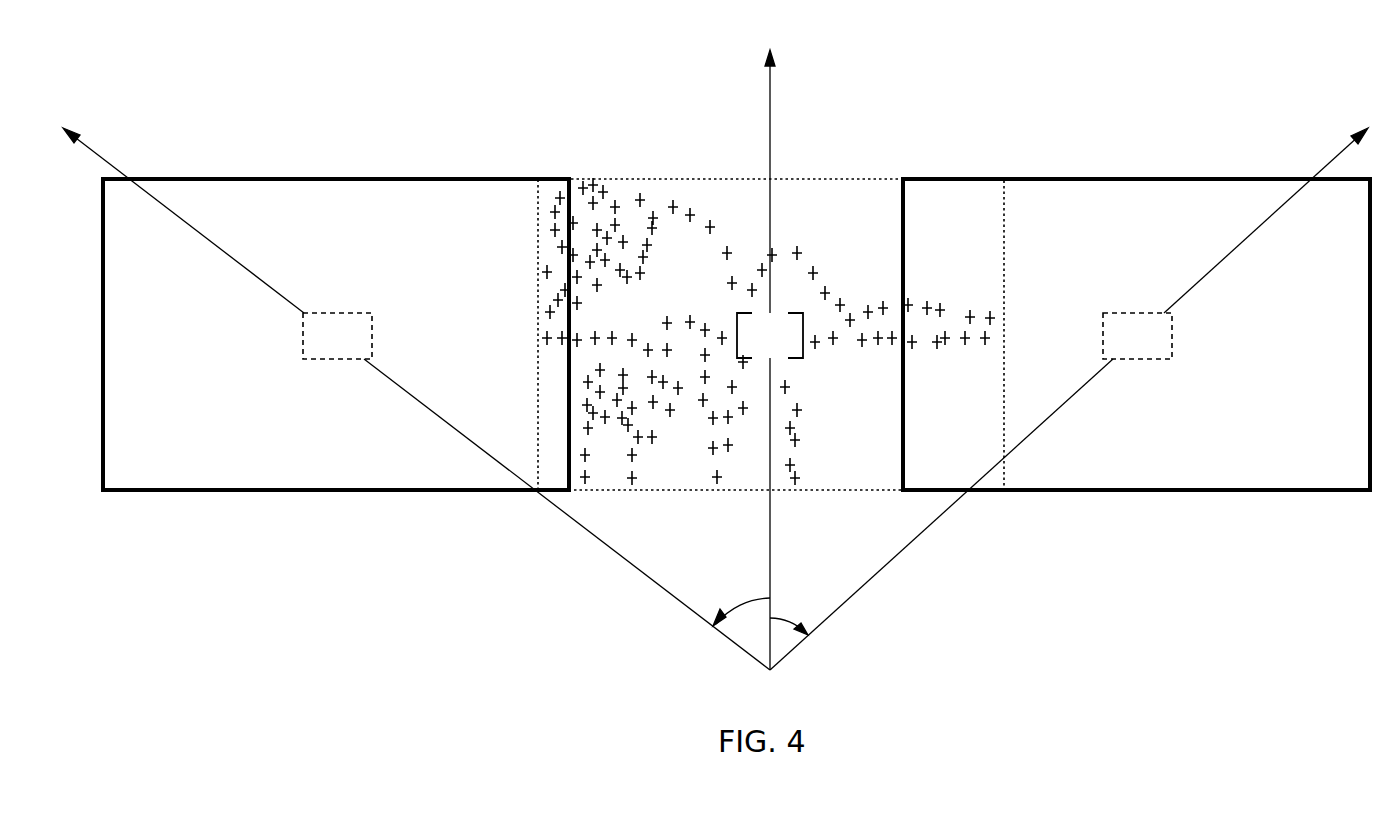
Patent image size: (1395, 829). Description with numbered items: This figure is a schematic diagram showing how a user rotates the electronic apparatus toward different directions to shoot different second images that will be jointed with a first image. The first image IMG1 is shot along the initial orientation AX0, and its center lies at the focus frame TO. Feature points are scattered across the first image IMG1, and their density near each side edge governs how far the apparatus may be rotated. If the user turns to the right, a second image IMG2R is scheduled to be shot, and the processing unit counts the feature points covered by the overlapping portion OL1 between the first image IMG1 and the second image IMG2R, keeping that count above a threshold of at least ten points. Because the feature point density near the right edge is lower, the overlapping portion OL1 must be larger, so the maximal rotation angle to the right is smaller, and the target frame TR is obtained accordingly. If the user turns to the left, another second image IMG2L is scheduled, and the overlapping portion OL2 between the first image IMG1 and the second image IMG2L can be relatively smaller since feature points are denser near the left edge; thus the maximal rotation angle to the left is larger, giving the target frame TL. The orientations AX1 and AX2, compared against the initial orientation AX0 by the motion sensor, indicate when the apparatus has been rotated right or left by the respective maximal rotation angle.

The initial orientation AX0 is at (771, 344).
The orientation AX1 is at (1075, 383).
The orientation AX2 is at (413, 383).
The first image IMG1 is at (653, 178).
The second image IMG2L is at (232, 179).
The second image IMG2R is at (1110, 179).
The overlapping portion OL1 is at (1004, 178).
The overlapping portion OL2 is at (569, 178).
The target frame TL is at (357, 349).
The focus frame TO is at (792, 349).
The target frame TR is at (1158, 349).